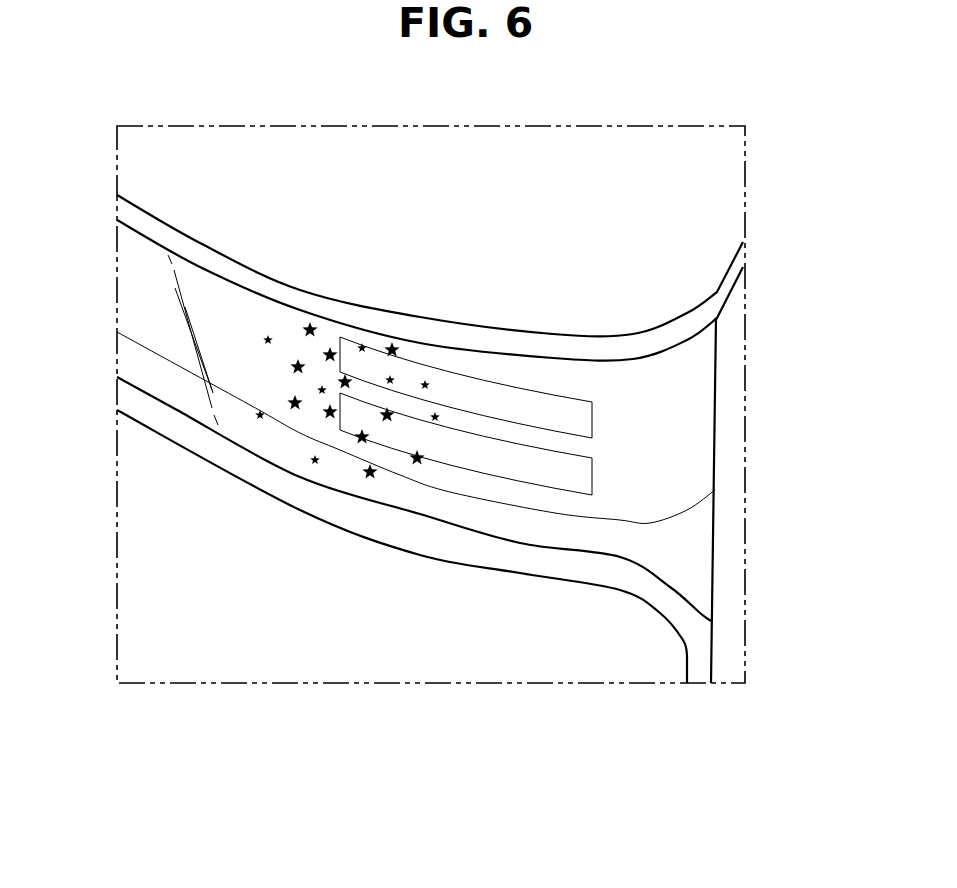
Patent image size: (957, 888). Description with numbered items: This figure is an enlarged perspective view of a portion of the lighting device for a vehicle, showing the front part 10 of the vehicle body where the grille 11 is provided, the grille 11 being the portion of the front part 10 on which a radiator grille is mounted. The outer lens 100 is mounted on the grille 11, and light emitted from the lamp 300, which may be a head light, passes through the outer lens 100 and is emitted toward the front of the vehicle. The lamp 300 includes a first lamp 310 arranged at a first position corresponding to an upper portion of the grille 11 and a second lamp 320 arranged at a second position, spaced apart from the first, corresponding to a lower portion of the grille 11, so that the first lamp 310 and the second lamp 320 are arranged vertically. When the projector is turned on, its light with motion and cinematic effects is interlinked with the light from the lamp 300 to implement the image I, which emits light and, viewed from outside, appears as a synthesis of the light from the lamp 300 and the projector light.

The front part 10 is at (367, 593).
The grille 11 is at (255, 477).
The outer lens 100 is at (155, 315).
The lamp 300 is at (617, 416).
The first lamp 310 is at (585, 413).
The second lamp 320 is at (580, 477).
The image I is at (417, 465).